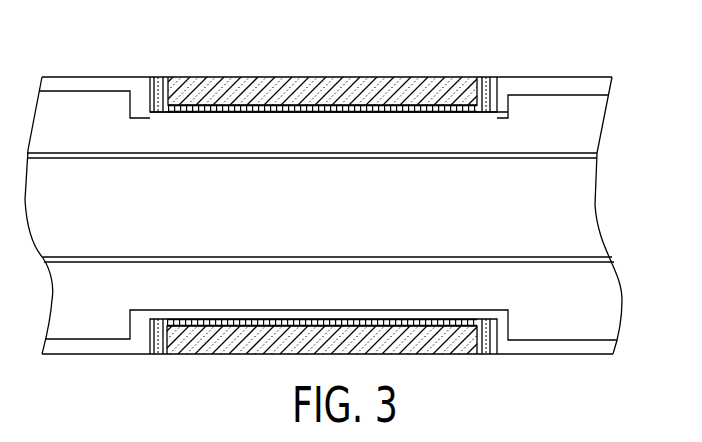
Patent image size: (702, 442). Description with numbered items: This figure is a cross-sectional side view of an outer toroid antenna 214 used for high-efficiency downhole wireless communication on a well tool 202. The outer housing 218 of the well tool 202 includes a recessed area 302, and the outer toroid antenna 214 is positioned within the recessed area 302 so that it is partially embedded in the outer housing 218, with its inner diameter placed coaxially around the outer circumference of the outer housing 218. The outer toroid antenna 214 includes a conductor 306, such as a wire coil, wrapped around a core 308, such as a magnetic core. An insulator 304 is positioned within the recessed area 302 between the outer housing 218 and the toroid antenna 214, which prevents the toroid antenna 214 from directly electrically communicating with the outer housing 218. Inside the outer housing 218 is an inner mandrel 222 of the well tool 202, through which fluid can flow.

The well tool 202 is at (594, 118).
The outer toroid antenna 214 is at (328, 65).
The outer housing 218 is at (86, 82).
The inner mandrel 222 is at (594, 206).
The recessed area 302 is at (158, 320).
The insulator 304 is at (488, 92).
The conductor 306 is at (270, 78).
The core 308 is at (317, 92).